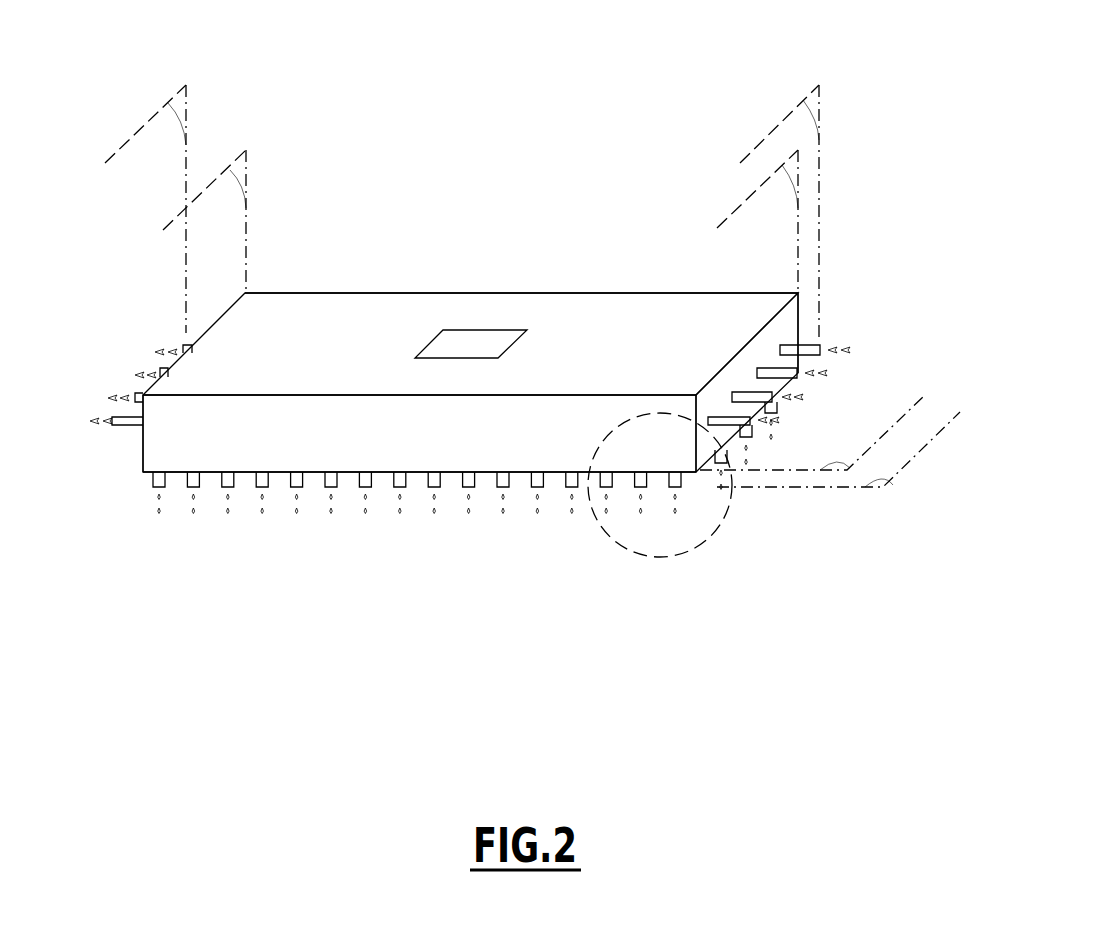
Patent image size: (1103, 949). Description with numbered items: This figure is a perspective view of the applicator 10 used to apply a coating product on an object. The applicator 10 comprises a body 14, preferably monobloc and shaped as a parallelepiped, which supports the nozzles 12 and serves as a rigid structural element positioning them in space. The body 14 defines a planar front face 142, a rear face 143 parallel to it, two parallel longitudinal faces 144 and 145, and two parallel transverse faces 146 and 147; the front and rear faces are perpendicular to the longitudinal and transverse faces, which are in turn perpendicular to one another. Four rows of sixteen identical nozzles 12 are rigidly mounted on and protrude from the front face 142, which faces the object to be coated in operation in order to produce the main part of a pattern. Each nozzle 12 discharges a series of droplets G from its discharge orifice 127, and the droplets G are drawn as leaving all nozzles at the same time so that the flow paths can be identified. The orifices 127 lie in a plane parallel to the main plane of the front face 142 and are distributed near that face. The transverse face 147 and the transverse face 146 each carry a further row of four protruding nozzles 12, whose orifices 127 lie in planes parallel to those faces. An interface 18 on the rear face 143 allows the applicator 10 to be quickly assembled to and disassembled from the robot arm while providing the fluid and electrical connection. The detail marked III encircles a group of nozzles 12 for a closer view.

The applicator 10 is at (517, 260).
The nozzles 12 is at (773, 373).
The body 14 is at (290, 330).
The interface 18 is at (477, 340).
The front face 142 is at (450, 473).
The rear face 143 is at (608, 315).
The longitudinal face 144 is at (207, 440).
The longitudinal face 145 is at (805, 312).
The transverse face 146 is at (142, 446).
The transverse face 147 is at (712, 392).
The discharge orifice 127 is at (180, 110).
The droplets G is at (132, 373).
The detail section III is at (683, 550).